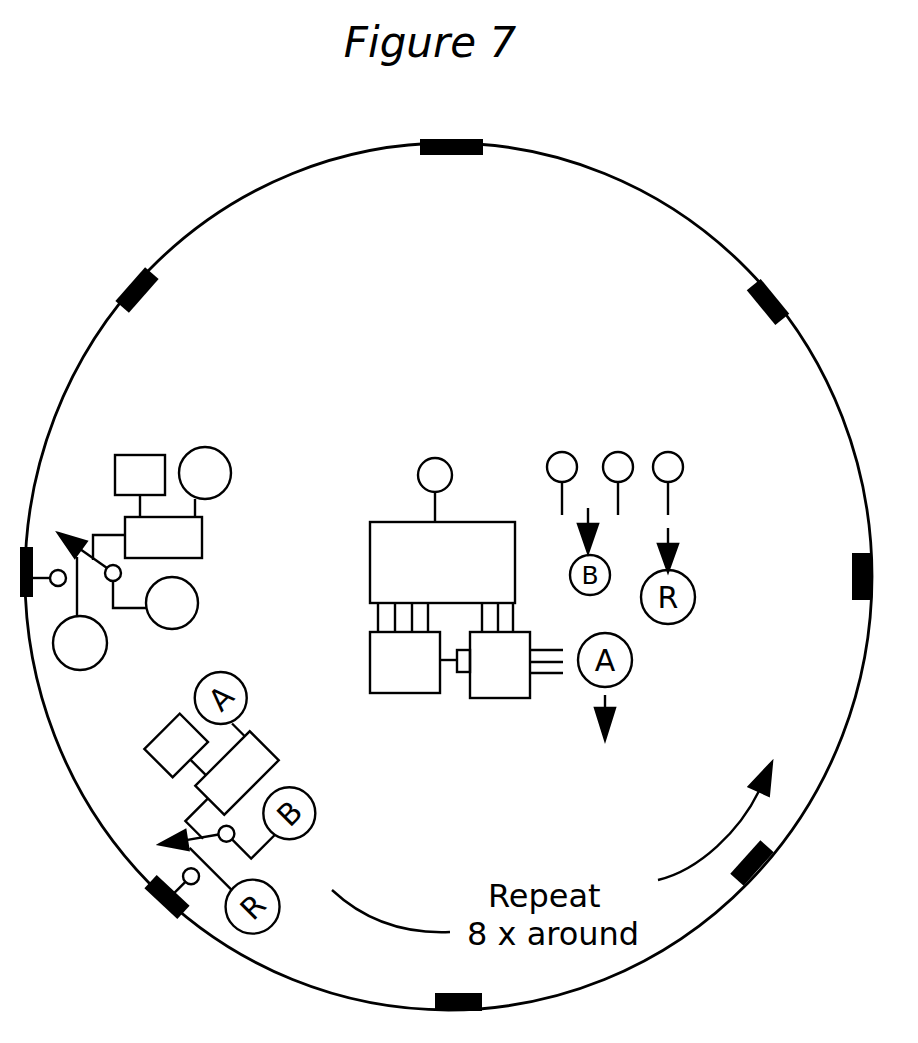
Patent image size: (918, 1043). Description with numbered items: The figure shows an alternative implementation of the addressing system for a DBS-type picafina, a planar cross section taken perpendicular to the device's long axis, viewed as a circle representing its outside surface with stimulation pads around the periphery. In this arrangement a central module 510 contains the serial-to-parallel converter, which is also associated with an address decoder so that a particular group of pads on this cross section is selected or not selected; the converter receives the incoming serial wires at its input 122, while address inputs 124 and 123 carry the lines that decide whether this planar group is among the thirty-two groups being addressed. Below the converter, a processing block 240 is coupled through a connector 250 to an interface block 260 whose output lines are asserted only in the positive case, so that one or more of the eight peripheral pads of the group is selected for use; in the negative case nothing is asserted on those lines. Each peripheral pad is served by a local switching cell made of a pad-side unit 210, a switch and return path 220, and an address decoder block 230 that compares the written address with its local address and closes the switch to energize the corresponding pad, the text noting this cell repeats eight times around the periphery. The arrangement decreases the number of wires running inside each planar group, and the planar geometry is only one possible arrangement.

The sensor 122 is at (452, 465).
The sensors 123 is at (698, 447).
The sensor 124 is at (577, 429).
The module 210 is at (165, 447).
The actuator assembly 220 is at (66, 528).
The controller unit 230 is at (212, 542).
The processor 240 is at (365, 652).
The connector 250 is at (458, 685).
The interface module 260 is at (487, 705).
The main controller 510 is at (375, 502).